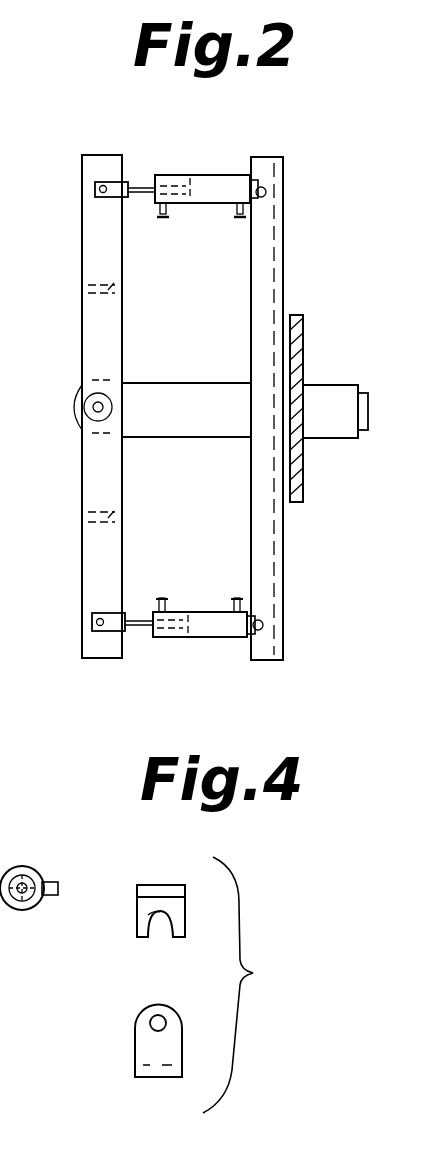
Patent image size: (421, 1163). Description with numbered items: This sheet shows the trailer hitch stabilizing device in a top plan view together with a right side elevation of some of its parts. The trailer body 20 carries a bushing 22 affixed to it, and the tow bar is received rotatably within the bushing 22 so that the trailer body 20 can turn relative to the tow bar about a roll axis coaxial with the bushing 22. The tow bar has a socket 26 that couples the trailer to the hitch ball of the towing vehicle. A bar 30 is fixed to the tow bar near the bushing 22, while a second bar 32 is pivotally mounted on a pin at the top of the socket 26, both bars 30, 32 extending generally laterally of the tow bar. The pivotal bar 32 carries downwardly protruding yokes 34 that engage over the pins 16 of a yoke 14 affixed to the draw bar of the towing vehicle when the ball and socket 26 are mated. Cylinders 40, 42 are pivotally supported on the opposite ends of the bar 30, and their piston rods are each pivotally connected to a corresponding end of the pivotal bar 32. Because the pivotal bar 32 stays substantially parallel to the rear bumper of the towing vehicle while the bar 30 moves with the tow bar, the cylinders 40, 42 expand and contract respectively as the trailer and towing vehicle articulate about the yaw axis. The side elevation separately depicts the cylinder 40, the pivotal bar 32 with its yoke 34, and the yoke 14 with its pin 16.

In FIG. 4, the yoke 14 is at (137, 1070).
In FIG. 4, the pins 16 is at (150, 1018).
In FIG. 2, the body 20 is at (303, 457).
In FIG. 2, the bushing 22 is at (356, 352).
In FIG. 2, the socket 26 is at (176, 360).
In FIG. 2, the bar 30 is at (283, 533).
In FIG. 2, the bar 32 is at (82, 457).
In FIG. 4, the bar 32 is at (160, 885).
In FIG. 2, the yokes 34 is at (125, 265).
In FIG. 4, the yokes 34 is at (150, 913).
In FIG. 2, the cylinder 40 is at (213, 175).
In FIG. 4, the cylinder 40 is at (35, 838).
In FIG. 2, the cylinder 42 is at (200, 611).